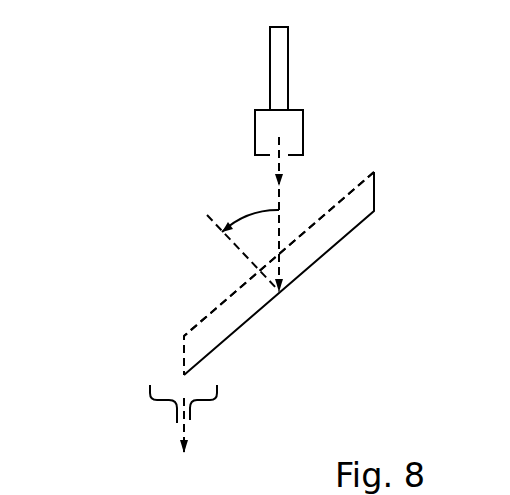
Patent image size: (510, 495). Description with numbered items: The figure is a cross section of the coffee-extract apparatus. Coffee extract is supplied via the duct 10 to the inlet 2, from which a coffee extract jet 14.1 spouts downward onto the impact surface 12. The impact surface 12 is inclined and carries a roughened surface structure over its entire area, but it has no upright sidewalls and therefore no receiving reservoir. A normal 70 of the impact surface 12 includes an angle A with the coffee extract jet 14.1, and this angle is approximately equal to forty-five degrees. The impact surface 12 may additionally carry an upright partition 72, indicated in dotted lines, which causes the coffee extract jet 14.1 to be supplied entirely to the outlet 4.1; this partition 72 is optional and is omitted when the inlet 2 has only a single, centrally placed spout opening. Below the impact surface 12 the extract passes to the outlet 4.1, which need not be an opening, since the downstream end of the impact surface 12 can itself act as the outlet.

The duct 10 is at (288, 68).
The inlet 2 is at (303, 132).
The coffee extract jet 14.1 is at (279, 172).
The angle A is at (250, 209).
The normal 70 is at (233, 243).
The upright partition 72 is at (363, 197).
The impact surface 12 is at (357, 227).
The outlet 4.1 is at (177, 423).